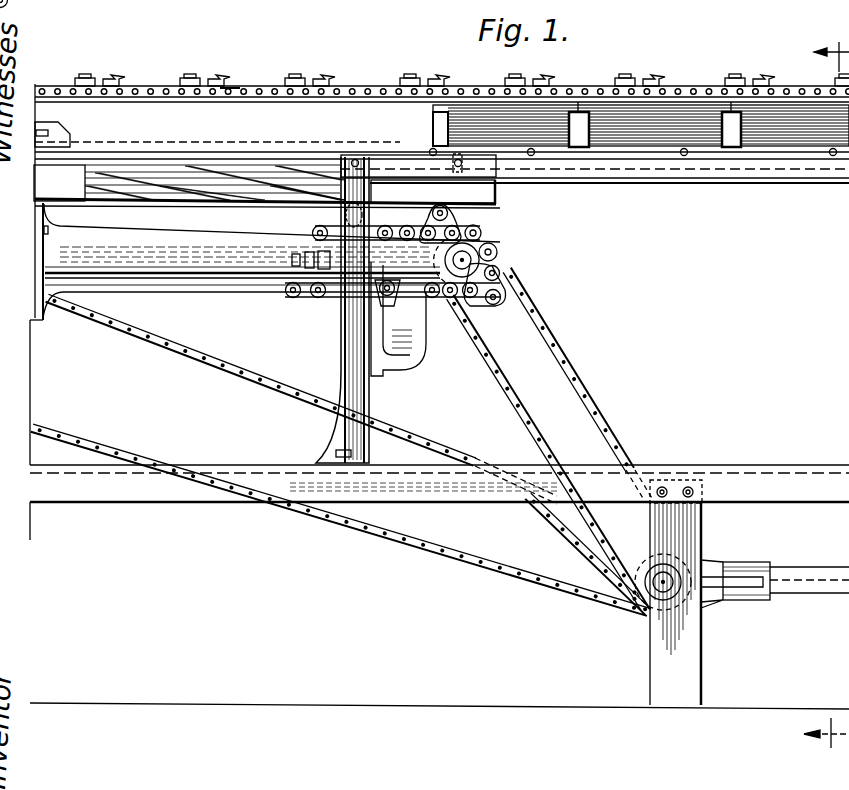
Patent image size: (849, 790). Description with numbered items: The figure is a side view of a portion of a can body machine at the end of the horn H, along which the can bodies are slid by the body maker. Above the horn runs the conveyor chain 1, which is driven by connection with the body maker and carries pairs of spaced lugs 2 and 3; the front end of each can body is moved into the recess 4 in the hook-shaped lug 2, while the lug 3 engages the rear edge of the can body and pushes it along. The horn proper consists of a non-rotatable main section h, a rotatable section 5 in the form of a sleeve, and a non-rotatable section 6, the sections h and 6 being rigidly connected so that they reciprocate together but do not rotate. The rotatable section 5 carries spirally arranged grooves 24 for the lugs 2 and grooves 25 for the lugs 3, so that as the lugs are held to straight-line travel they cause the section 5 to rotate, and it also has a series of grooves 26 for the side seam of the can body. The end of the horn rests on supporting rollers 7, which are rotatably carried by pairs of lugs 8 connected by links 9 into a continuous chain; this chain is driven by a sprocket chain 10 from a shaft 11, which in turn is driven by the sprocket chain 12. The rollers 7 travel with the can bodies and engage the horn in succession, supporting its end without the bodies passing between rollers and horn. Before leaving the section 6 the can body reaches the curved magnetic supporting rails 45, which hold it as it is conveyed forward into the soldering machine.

The conveyor chain 1 is at (359, 94).
The lug 2 is at (232, 86).
The lug 3 is at (190, 85).
The recess 4 is at (230, 85).
The rotatable section 5 is at (272, 223).
The non-rotatable section 6 is at (485, 192).
The supporting roller 7 is at (449, 212).
The lug 8 is at (481, 231).
The link 9 is at (487, 255).
The sprocket chain 10 is at (606, 416).
The shaft 11 is at (666, 580).
The sprocket chain 12 is at (486, 566).
The groove 24 is at (312, 172).
The groove 25 is at (249, 164).
The groove 26 is at (114, 164).
The magnetic supporting rail 45 is at (682, 161).
The non-rotatable main section h is at (59, 183).
The horn H is at (241, 259).